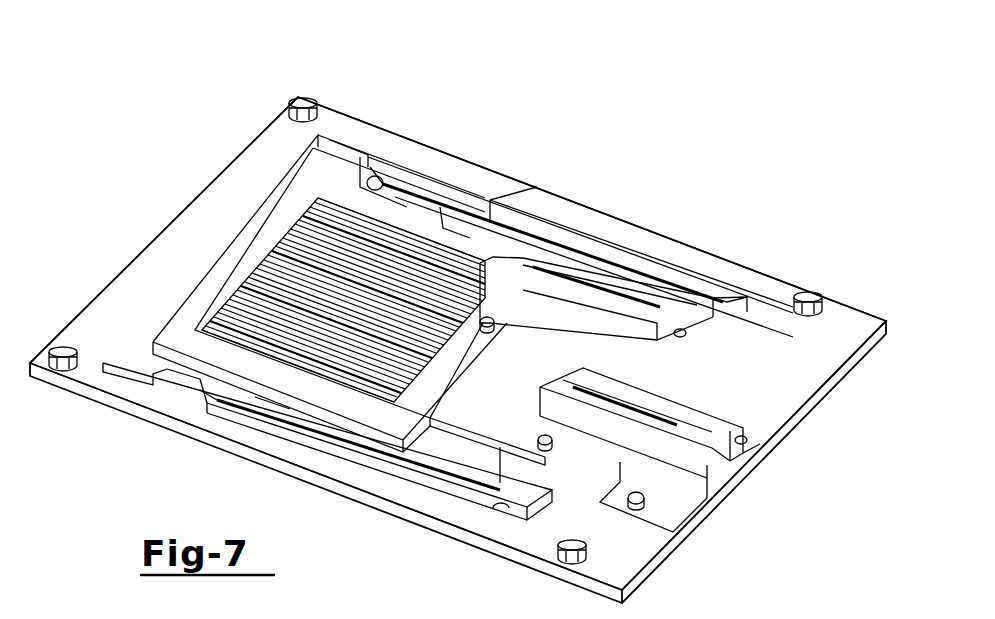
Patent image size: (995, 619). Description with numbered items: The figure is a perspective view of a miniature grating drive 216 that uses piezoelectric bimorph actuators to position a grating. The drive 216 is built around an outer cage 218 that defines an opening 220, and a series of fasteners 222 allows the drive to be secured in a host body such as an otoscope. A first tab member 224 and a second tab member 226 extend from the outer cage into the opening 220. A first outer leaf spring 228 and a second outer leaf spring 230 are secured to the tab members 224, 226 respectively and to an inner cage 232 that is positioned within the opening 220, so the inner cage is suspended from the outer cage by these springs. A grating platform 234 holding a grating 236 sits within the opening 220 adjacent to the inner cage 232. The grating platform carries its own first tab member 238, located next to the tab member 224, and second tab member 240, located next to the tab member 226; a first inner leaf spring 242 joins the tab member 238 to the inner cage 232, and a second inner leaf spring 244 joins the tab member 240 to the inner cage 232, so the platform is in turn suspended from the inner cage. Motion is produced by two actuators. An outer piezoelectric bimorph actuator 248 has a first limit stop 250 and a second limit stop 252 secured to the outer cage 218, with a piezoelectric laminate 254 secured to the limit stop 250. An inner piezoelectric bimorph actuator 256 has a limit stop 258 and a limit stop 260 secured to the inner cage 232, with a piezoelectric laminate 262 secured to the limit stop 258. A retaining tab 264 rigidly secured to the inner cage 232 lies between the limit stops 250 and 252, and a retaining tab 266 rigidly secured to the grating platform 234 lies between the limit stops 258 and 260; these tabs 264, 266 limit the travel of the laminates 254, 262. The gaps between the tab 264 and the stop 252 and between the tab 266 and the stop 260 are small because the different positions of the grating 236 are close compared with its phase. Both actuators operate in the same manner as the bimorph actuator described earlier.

The miniature grating drive 216 is at (145, 105).
The outer cage 218 is at (118, 298).
The opening 220 is at (117, 365).
The fasteners 222 is at (290, 125).
The first tab member 224 is at (185, 393).
The second tab member 226 is at (382, 160).
The first outer leaf spring 228 is at (240, 400).
The second outer leaf spring 230 is at (400, 190).
The inner cage 232 is at (525, 478).
The grating platform 234 is at (173, 330).
The grating 236 is at (240, 287).
The first tab member 238 is at (277, 378).
The second tab member 240 is at (430, 223).
The first inner leaf spring 242 is at (377, 443).
The second inner leaf spring 244 is at (490, 207).
The outer piezoelectric bimorph actuator 248 is at (728, 484).
The first limit stop 250 is at (740, 420).
The second limit stop 252 is at (683, 485).
The piezoelectric laminate 254 is at (657, 432).
The inner piezoelectric bimorph actuator 256 is at (640, 282).
The limit stop 258 is at (652, 298).
The limit stop 260 is at (627, 375).
The piezoelectric laminate 262 is at (573, 303).
The retaining tab 264 is at (547, 398).
The retaining tab 266 is at (517, 280).